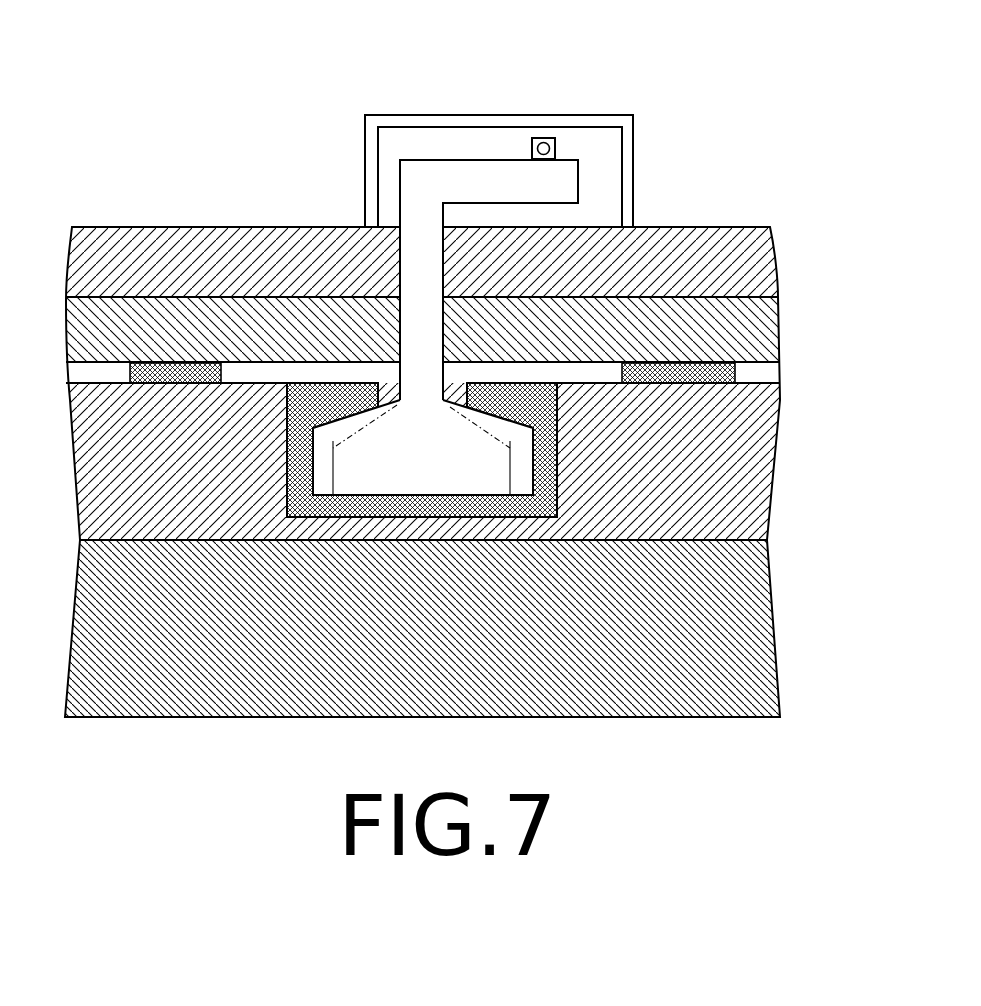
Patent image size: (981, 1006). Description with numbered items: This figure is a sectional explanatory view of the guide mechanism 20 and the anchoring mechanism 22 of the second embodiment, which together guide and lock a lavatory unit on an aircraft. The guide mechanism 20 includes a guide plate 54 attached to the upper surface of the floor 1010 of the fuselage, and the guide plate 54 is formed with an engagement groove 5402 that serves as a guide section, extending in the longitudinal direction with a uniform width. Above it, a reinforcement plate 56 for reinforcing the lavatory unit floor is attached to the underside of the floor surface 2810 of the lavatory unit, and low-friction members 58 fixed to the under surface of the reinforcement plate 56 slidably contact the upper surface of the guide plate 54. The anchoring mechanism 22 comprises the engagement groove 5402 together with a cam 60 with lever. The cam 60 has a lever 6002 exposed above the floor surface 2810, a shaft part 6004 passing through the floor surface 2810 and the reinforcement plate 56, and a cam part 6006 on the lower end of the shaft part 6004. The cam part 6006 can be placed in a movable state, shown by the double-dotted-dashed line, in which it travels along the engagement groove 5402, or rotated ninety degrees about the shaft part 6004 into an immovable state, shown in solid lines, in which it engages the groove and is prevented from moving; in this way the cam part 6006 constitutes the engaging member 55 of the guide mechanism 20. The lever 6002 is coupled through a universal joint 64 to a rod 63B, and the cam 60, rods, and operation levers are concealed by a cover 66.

The guide mechanism 20 is at (530, 527).
The anchoring mechanism 22 is at (559, 362).
The guide plate 54 is at (745, 461).
The engaging member 55 is at (333, 425).
The reinforcement plate 56 is at (762, 330).
The low-friction member 58 is at (130, 377).
The cam with lever 60 is at (393, 398).
The universal joint 64 is at (556, 150).
The cover 66 is at (395, 113).
The rod 63B is at (538, 137).
The floor 1010 is at (735, 607).
The floor surface 2810 is at (758, 255).
The engagement groove 5402 is at (552, 366).
The lever 6002 is at (473, 158).
The shaft part 6004 is at (397, 400).
The cam part 6006 is at (333, 425).